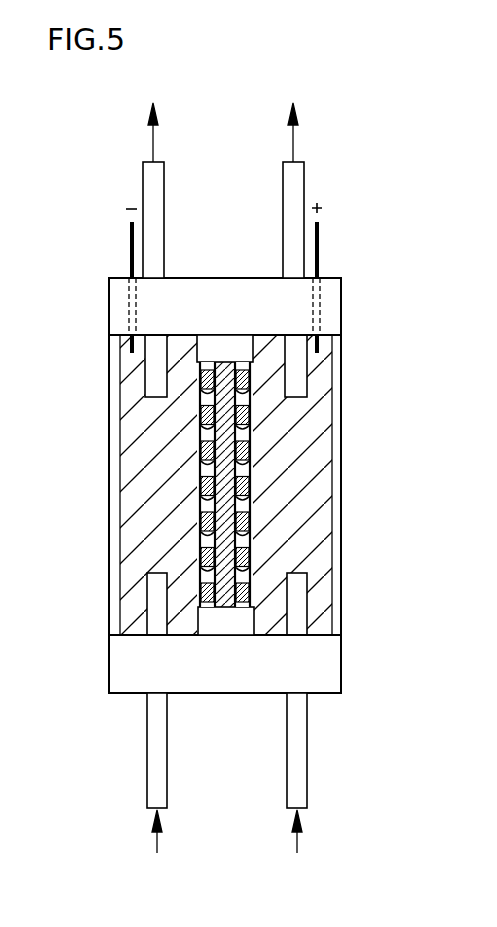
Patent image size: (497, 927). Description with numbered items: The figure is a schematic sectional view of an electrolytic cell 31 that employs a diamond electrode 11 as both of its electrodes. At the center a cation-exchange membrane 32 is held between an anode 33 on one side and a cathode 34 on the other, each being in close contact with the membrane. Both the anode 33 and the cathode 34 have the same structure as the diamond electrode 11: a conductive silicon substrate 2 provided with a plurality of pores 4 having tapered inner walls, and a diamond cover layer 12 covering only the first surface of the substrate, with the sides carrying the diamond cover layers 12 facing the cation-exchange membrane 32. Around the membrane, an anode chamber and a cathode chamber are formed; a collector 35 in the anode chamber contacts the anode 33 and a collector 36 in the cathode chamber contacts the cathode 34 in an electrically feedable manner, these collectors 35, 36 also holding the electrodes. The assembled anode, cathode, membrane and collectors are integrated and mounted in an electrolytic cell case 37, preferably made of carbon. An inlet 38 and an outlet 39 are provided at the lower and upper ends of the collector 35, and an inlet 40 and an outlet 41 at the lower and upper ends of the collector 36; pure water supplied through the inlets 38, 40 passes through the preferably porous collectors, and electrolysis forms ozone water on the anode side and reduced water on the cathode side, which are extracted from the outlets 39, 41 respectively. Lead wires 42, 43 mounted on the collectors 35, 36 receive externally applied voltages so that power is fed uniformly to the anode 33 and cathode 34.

The electrolytic cell 31 is at (416, 105).
The outlet 41 is at (164, 179).
The outlet 39 is at (283, 199).
The lead wire 43 is at (130, 247).
The lead wire 42 is at (320, 243).
The electrolytic cell case 37 is at (335, 407).
The collector 36 is at (168, 537).
The collector 35 is at (298, 543).
The pores 4 is at (243, 397).
The conductive silicon substrate 2 is at (213, 448).
The anode 33 is at (247, 487).
The diamond cover layer 12 is at (213, 525).
The diamond electrode 11 is at (247, 557).
The cathode 34 is at (207, 487).
The cation-exchange membrane 32 is at (230, 612).
The inlet 40 is at (147, 745).
The inlet 38 is at (307, 748).